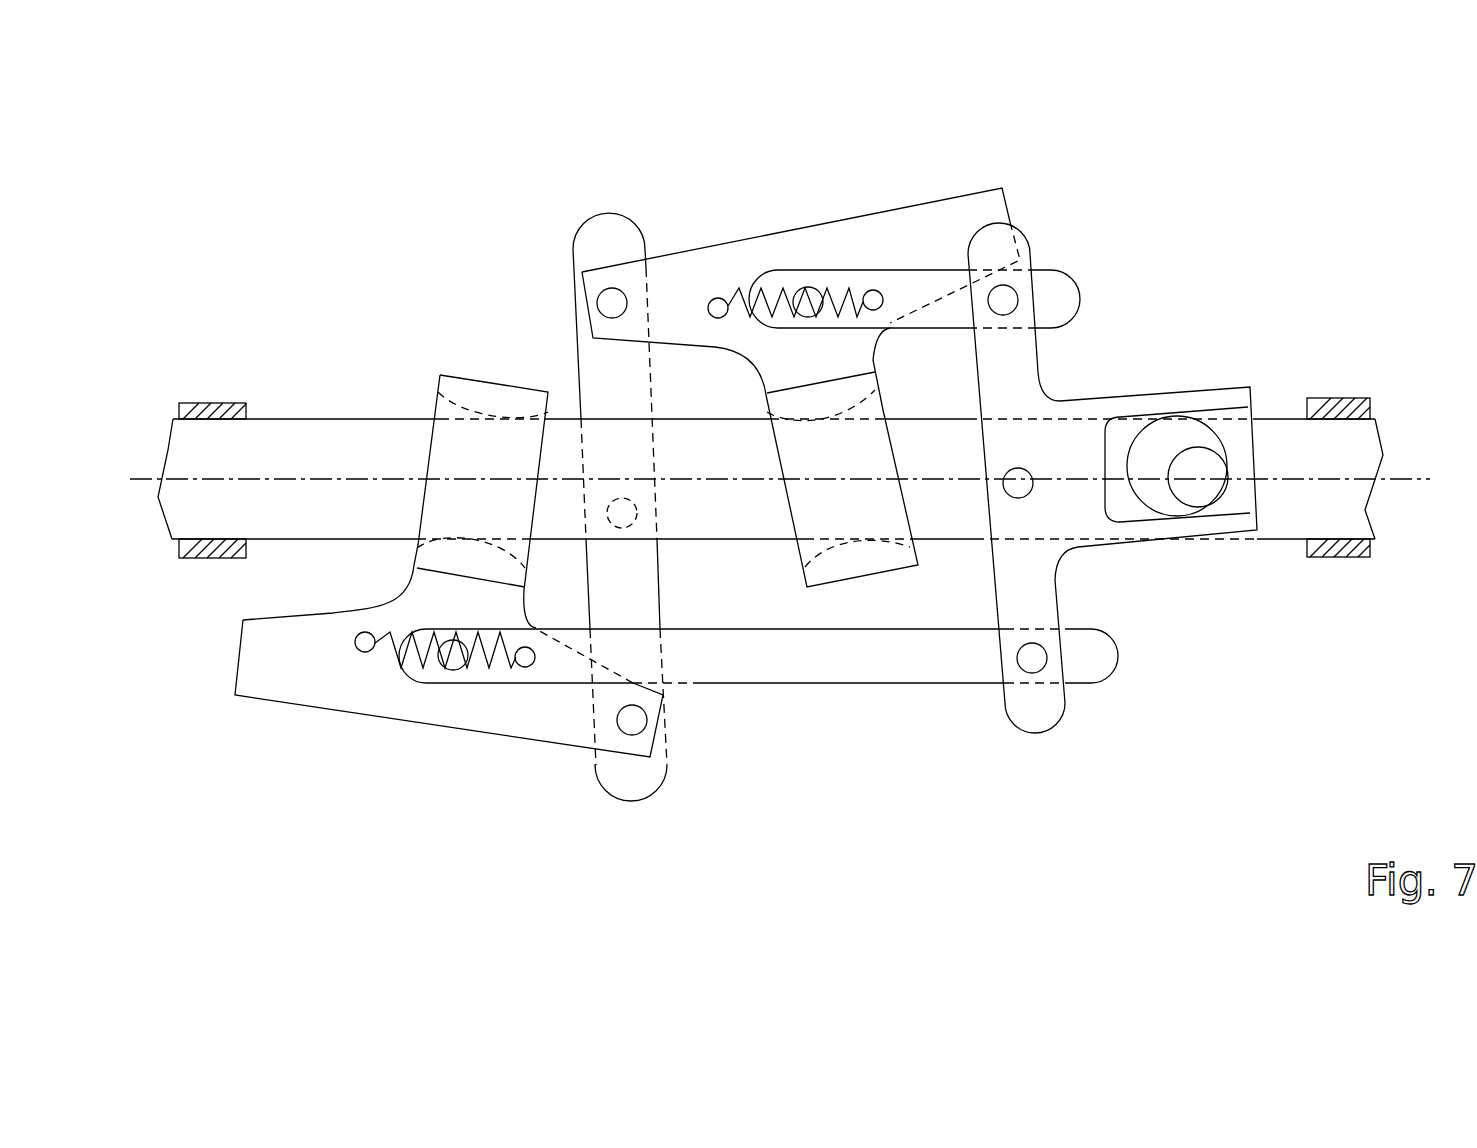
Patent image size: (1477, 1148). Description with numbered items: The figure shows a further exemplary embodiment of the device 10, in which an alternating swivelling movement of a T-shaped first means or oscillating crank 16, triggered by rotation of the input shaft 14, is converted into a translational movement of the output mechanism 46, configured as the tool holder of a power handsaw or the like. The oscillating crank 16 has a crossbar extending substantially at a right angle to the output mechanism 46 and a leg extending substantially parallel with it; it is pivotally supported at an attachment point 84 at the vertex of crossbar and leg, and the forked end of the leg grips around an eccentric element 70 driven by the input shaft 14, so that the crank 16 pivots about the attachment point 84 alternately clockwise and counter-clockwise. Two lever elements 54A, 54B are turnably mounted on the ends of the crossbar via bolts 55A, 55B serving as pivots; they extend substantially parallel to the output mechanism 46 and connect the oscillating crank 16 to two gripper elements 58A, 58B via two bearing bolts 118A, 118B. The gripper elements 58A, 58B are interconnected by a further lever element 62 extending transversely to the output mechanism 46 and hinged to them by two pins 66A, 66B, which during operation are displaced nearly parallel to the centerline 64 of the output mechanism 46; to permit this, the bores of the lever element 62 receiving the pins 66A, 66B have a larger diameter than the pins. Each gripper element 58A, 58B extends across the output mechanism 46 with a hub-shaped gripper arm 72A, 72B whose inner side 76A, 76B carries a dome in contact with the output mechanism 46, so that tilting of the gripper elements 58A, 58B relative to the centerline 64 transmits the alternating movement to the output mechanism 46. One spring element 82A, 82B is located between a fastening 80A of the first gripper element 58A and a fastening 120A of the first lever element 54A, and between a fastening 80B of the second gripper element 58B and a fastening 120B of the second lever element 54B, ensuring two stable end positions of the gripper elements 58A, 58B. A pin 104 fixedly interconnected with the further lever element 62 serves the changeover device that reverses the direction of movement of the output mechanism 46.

The device 10 is at (303, 244).
The input shaft 14 is at (1210, 470).
The first means 16 is at (1037, 407).
The output mechanism 46 is at (200, 455).
The first lever element 54A is at (948, 312).
The second lever element 54B is at (783, 660).
The bolt 55A is at (1006, 297).
The bolt 55B is at (1032, 665).
The first gripper element 58A is at (668, 249).
The second gripper element 58B is at (296, 706).
The further lever element 62 is at (600, 247).
The centerline 64 is at (287, 477).
The pin 66A is at (606, 305).
The pin 66B is at (634, 724).
The eccentric element 70 is at (1174, 443).
The gripper arm 72A is at (854, 566).
The gripper arm 72B is at (458, 390).
The inner side 76A is at (897, 542).
The inner side 76B is at (452, 407).
The fastening 80A is at (718, 298).
The fastening 80B is at (362, 652).
The spring element 82A is at (775, 292).
The spring element 82B is at (475, 662).
The attachment point 84 is at (1022, 493).
The pin 104 is at (623, 515).
The bearing bolt 118A is at (812, 290).
The bearing bolt 118B is at (447, 672).
The fastening 120A is at (876, 295).
The fastening 120B is at (528, 667).